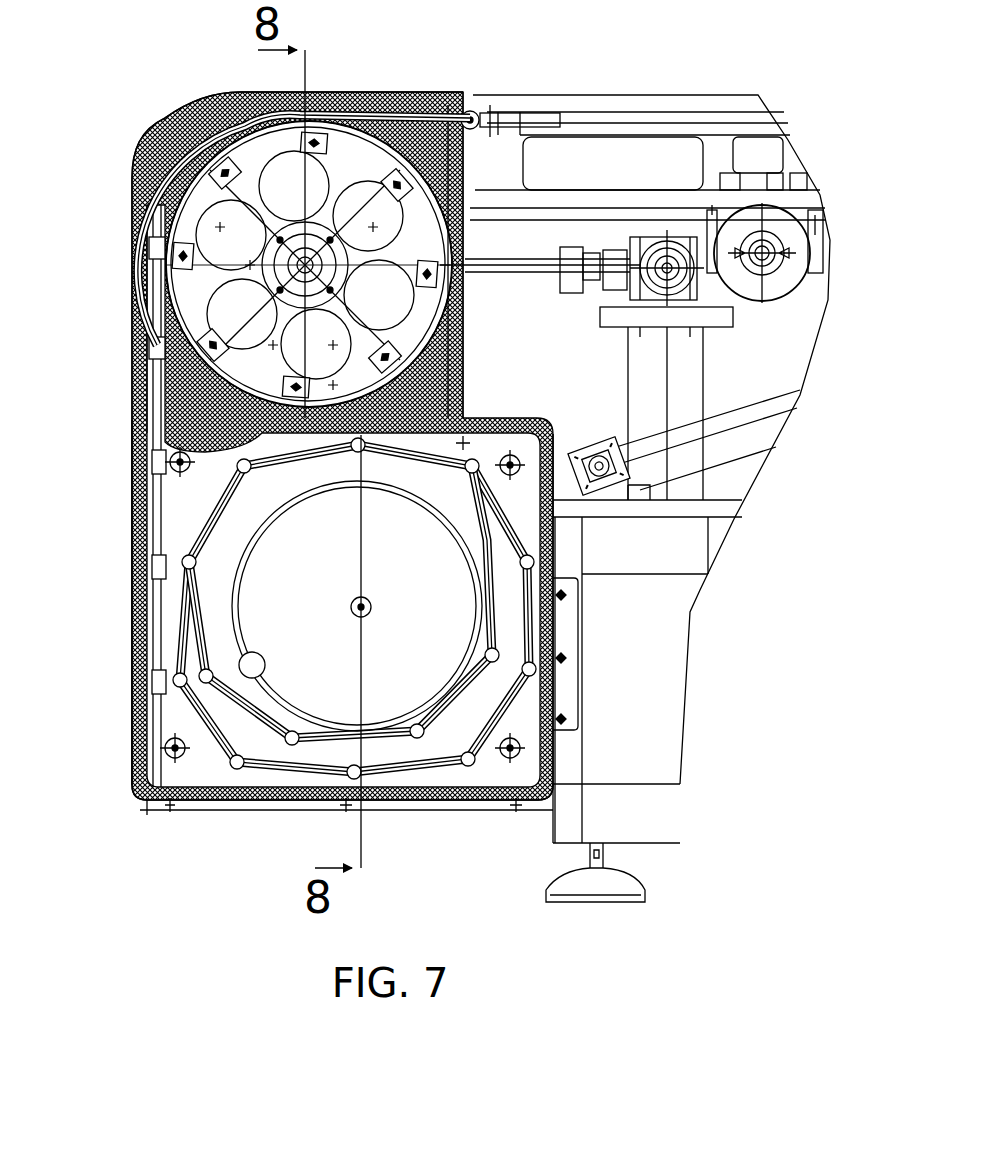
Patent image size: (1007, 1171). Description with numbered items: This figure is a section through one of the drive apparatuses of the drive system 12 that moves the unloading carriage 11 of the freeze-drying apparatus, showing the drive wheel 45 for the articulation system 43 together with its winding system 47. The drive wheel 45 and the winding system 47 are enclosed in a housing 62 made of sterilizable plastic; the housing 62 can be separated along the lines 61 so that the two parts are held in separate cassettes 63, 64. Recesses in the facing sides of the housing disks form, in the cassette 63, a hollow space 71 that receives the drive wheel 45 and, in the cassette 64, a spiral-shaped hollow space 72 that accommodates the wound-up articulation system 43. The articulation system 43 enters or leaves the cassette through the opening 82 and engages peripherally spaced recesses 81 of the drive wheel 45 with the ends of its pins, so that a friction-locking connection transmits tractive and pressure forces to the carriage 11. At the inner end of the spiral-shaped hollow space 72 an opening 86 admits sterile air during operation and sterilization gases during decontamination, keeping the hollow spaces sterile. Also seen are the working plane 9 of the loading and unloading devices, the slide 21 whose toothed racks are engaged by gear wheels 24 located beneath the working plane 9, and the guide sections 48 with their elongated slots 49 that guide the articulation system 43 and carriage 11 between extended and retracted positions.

The working plane 9 is at (518, 230).
The carriage 11 is at (573, 105).
The drive system 12 is at (150, 128).
The slide 21 is at (808, 180).
The gear wheels 24 is at (800, 292).
The articulation system 43 is at (405, 118).
The drive wheel 45 is at (180, 298).
The winding system 47 is at (200, 770).
The guide sections 48 is at (773, 94).
The elongated slot 49 is at (770, 123).
The separation lines 61 is at (150, 258).
The housing 62 is at (128, 440).
The cassette 63 is at (197, 107).
The cassette 64 is at (130, 745).
The hollow space 71 is at (137, 190).
The spiral-shaped hollow space 72 is at (262, 537).
The recesses 81 is at (402, 279).
The entering/exiting opening 82 is at (153, 383).
The opening 86 is at (265, 675).